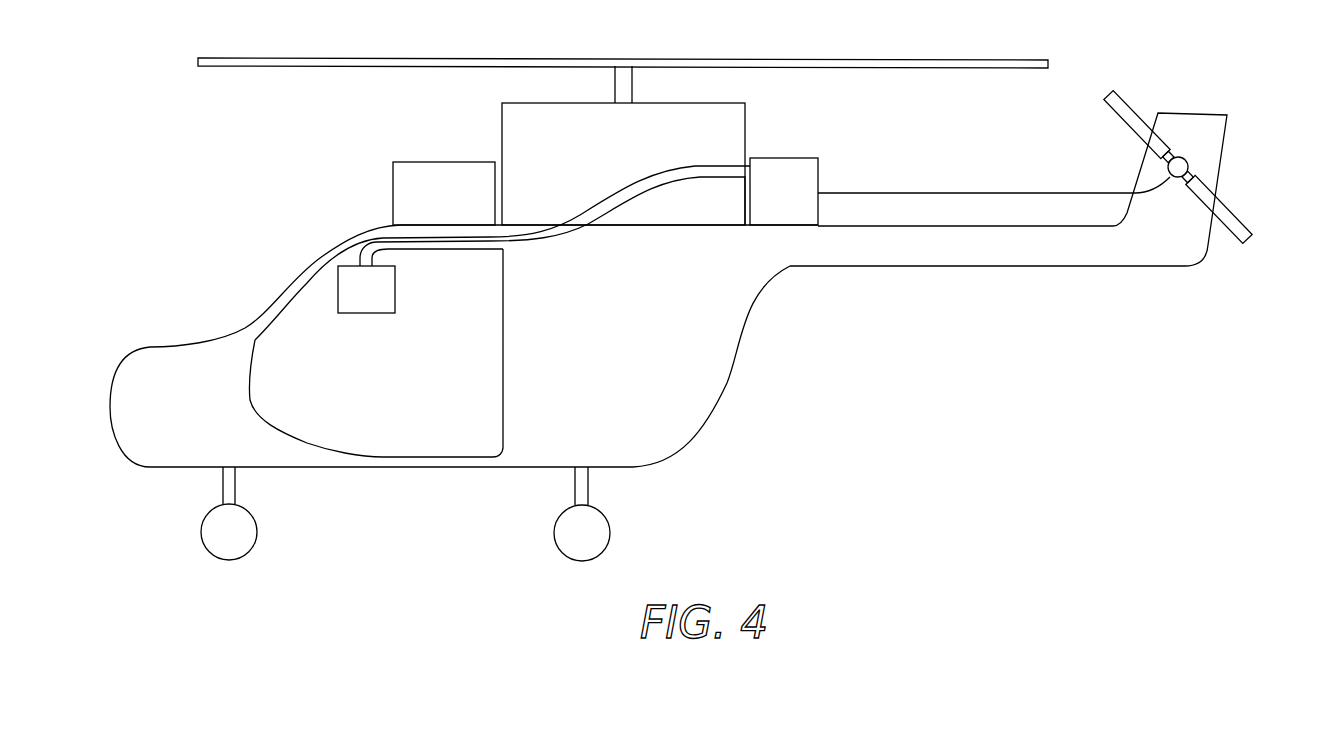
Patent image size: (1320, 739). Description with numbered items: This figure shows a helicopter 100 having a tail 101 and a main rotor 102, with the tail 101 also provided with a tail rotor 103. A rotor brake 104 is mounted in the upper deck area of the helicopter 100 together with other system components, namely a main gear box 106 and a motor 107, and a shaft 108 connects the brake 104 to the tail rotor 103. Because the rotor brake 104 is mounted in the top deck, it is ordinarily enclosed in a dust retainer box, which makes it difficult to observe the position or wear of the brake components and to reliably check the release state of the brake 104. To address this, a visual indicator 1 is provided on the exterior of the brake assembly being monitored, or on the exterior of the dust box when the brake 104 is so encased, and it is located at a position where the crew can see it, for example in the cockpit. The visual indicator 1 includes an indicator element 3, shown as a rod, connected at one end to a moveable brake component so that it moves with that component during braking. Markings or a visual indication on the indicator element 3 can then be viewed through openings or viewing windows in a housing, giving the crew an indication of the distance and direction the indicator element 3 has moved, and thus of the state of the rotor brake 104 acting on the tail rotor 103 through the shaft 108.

The oxygen generating device 1 is at (382, 314).
The supply hose 3 is at (744, 178).
The helicopter fuselage 100 is at (177, 347).
The tail section 101 is at (1152, 268).
The main rotor 102 is at (1016, 60).
The tail rotor 103 is at (1240, 213).
The engine unit 104 is at (788, 158).
The main gearbox 106 is at (502, 118).
The auxiliary unit 107 is at (393, 172).
The tail boom 108 is at (998, 193).